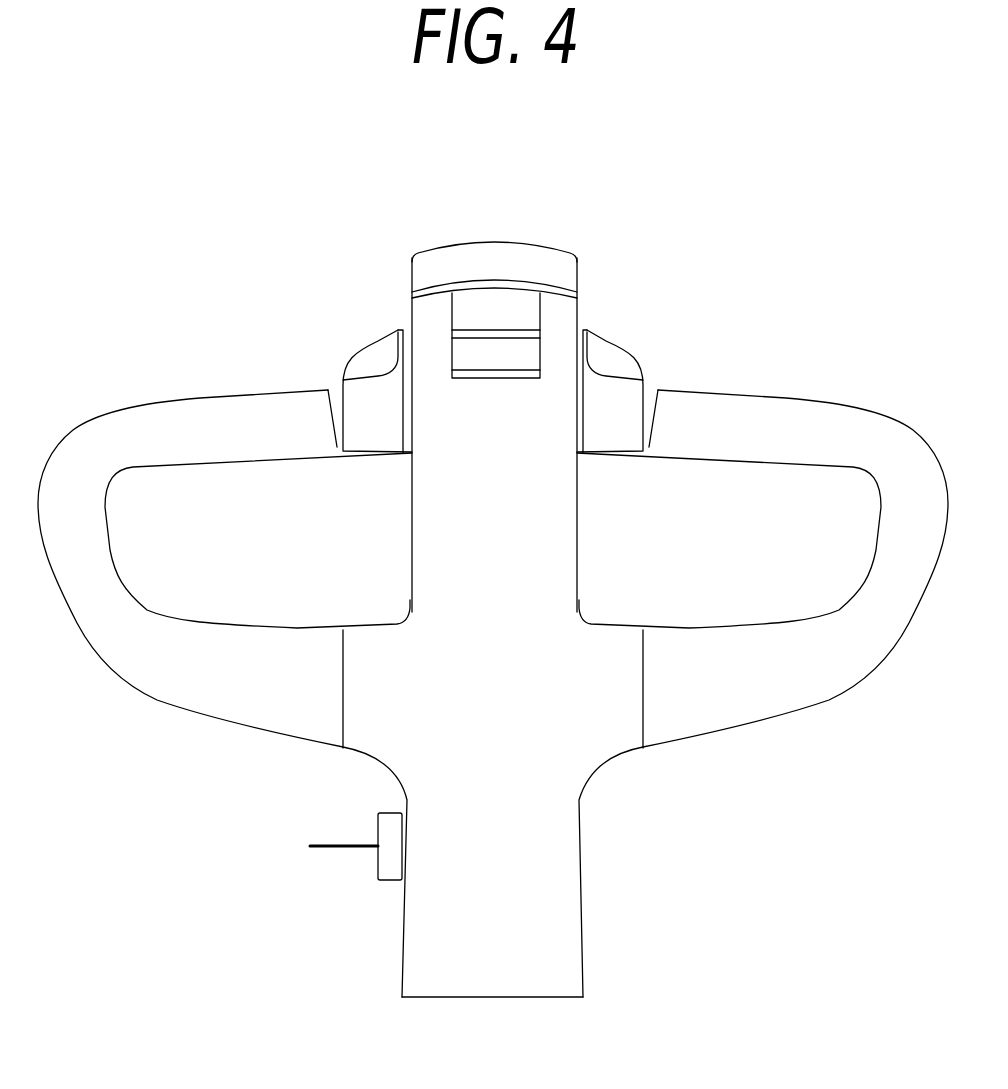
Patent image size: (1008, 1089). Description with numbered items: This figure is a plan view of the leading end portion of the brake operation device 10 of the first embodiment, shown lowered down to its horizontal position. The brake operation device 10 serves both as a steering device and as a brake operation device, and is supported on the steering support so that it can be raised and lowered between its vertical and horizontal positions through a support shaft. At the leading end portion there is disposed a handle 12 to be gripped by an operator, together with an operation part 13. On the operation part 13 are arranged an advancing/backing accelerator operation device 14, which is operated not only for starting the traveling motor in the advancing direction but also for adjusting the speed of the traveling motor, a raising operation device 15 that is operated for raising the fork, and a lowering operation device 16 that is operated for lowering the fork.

The brake operation device 10 is at (199, 822).
The handle 12 is at (177, 401).
The operation part 13 is at (526, 246).
The advancing/backing accelerator operation device 14 is at (372, 345).
The raising operation device 15 is at (478, 355).
The lowering operation device 16 is at (497, 296).